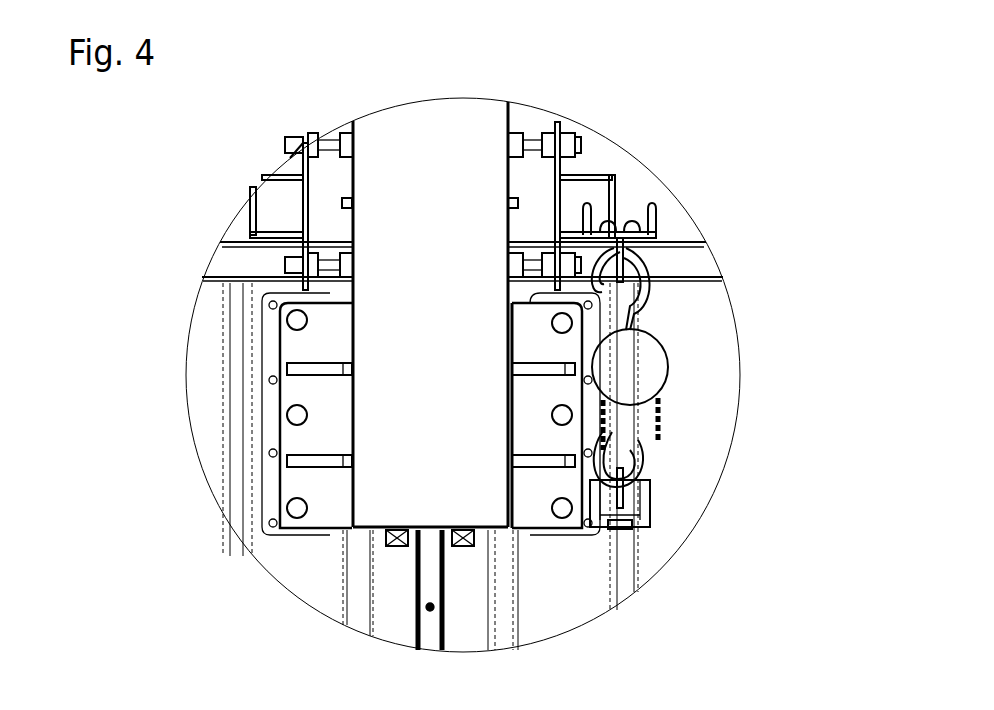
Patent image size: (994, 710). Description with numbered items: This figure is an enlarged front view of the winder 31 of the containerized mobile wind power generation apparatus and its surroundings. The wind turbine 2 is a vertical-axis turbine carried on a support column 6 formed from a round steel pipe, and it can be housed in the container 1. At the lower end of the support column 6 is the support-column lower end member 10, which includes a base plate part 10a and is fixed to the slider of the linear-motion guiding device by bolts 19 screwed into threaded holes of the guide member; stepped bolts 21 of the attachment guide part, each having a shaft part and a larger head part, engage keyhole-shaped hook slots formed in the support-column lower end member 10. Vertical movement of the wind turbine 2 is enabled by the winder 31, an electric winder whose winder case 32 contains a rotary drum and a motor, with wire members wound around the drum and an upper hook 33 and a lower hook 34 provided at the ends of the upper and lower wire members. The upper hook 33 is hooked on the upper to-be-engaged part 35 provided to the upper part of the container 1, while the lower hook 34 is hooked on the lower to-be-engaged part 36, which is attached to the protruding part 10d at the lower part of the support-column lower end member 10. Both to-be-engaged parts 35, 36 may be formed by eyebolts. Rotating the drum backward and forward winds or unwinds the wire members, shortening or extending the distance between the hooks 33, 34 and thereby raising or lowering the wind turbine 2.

The container 1 is at (213, 237).
The wind turbine 2 is at (511, 118).
The support column 6 is at (365, 182).
The support-column lower end member 10 is at (287, 350).
The base plate part 10a is at (312, 515).
The protruding part 10d is at (648, 492).
The bolts 19 is at (297, 320).
The stepped bolt 21 is at (297, 415).
The winder 31 is at (670, 352).
The winder case 32 is at (643, 372).
The upper hook 33 is at (635, 272).
The lower hook 34 is at (643, 467).
The upper to-be-engaged part 35 is at (612, 190).
The lower to-be-engaged part 36 is at (640, 515).